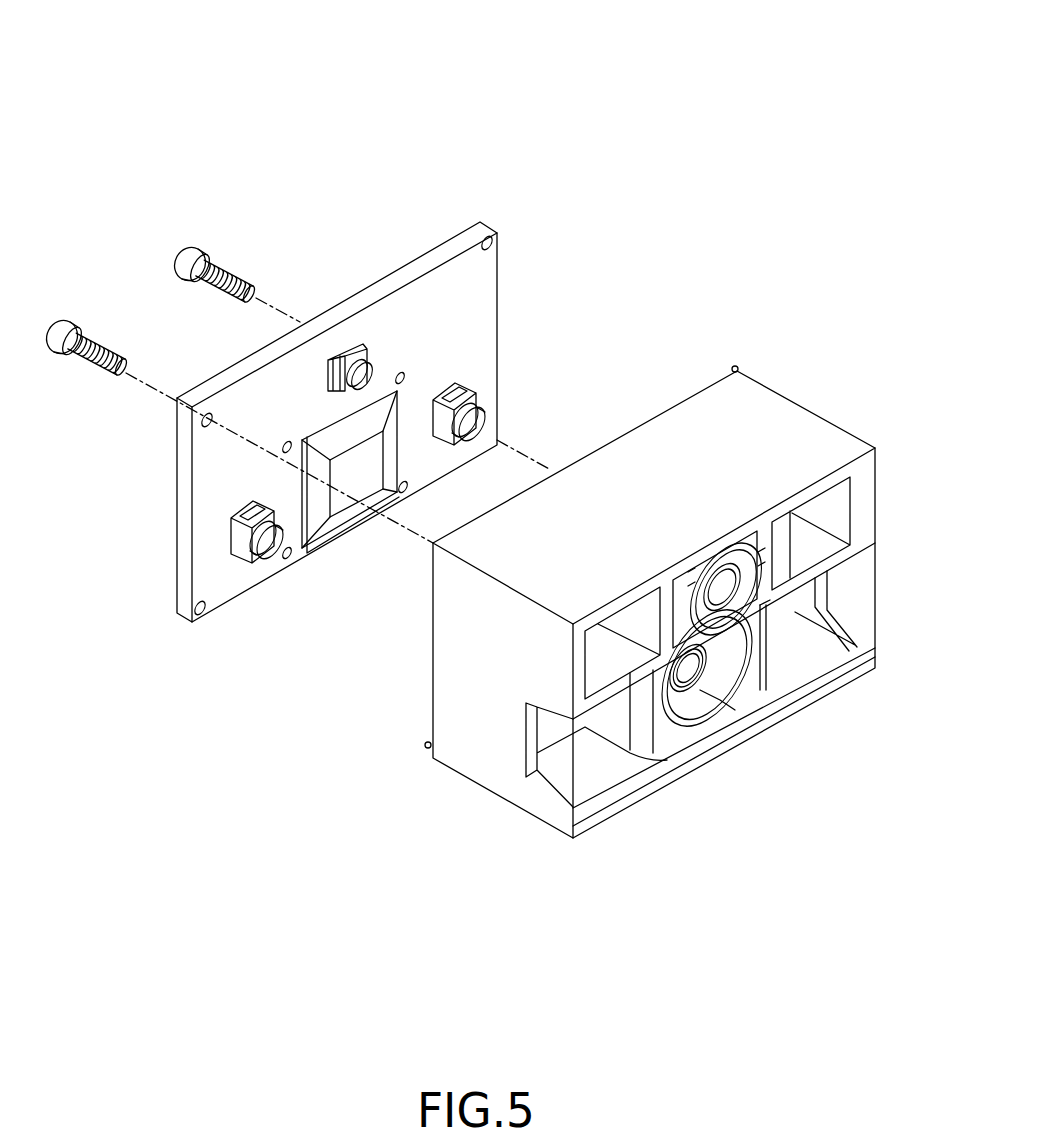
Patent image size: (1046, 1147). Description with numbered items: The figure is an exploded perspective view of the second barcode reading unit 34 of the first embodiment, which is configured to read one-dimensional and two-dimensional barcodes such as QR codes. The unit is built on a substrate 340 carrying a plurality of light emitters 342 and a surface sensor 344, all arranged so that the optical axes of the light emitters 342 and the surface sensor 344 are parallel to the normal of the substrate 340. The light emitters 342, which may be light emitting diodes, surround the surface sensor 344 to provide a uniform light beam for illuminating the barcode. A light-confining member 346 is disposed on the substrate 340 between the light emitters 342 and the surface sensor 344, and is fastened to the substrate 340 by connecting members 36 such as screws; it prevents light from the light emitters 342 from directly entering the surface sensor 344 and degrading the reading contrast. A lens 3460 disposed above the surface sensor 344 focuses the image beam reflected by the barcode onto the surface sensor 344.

The second barcode reading unit 34 is at (502, 33).
The connecting members 36 is at (190, 246).
The substrate 340 is at (402, 274).
The light emitters 342 is at (348, 350).
The surface sensor 344 is at (358, 468).
The light-confining member 346 is at (688, 426).
The lens 3460 is at (694, 706).